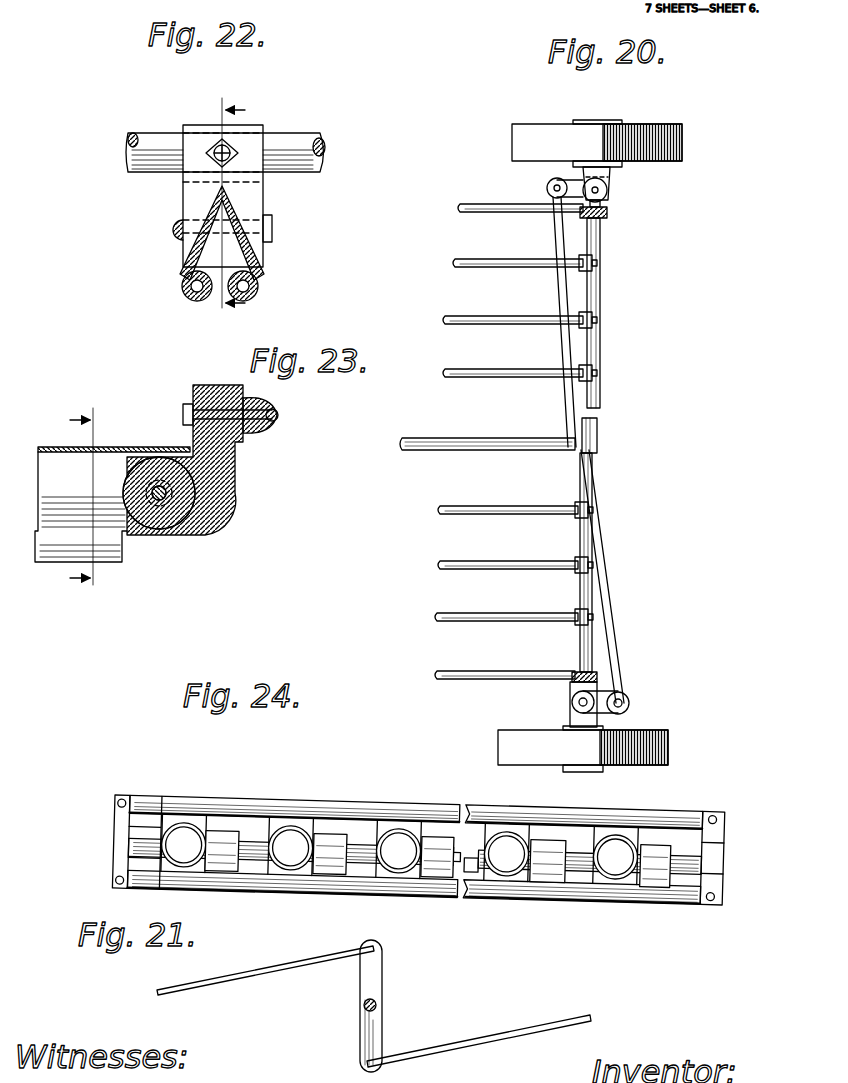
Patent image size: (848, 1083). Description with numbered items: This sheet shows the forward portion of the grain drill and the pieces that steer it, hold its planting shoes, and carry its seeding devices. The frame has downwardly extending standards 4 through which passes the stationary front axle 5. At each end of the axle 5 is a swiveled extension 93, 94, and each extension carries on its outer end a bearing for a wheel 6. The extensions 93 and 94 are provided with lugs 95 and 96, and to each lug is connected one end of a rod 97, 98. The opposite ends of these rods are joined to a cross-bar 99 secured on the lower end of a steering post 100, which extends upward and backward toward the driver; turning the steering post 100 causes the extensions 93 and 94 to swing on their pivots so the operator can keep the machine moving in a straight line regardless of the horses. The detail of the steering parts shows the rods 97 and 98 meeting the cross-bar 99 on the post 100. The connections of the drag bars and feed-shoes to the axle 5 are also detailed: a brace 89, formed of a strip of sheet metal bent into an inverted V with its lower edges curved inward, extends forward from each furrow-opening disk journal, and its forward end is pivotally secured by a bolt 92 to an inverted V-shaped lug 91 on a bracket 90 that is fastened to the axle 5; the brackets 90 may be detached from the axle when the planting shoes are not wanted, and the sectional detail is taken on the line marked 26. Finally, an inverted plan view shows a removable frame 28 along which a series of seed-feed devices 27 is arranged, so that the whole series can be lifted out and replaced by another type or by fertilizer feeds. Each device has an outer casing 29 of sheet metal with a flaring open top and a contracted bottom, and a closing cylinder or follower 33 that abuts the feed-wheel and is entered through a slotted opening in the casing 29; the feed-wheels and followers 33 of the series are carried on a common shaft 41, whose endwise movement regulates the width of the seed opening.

In FIG. 20, the standard 4 is at (607, 212).
In FIG. 22, the axle 5 is at (300, 148).
In FIG. 23, the axle 5 is at (265, 400).
In FIG. 20, the axle 5 is at (600, 300).
In FIG. 20, the wheel 6 is at (635, 145).
In FIG. 23, the section line 26 is at (89, 501).
In FIG. 22, the seed-feed device 27 is at (225, 211).
In FIG. 24, the seed-feed device 27 is at (353, 808).
In FIG. 24, the frame 28 is at (645, 890).
In FIG. 24, the outer casing 29 is at (282, 815).
In FIG. 24, the closing cylinder 33 is at (225, 858).
In FIG. 24, the shaft 41 is at (345, 865).
In FIG. 22, the brace 89 is at (240, 254).
In FIG. 20, the brace 89 is at (478, 318).
In FIG. 22, the bracket 90 is at (185, 192).
In FIG. 23, the bracket 90 is at (220, 465).
In FIG. 20, the bracket 90 is at (597, 372).
In FIG. 23, the lug 91 is at (155, 525).
In FIG. 22, the bolt 92 is at (175, 228).
In FIG. 23, the bolt 92 is at (159, 486).
In FIG. 20, the swiveled extension 93 is at (612, 181).
In FIG. 20, the swiveled extension 94 is at (570, 710).
In FIG. 20, the lug 95 is at (546, 184).
In FIG. 20, the lug 96 is at (630, 703).
In FIG. 20, the rod 97 is at (612, 597).
In FIG. 21, the rod 97 is at (485, 1035).
In FIG. 20, the rod 98 is at (575, 240).
In FIG. 21, the rod 98 is at (248, 972).
In FIG. 20, the cross-bar 99 is at (598, 440).
In FIG. 21, the cross-bar 99 is at (375, 972).
In FIG. 20, the steering post 100 is at (465, 438).
In FIG. 21, the steering post 100 is at (364, 1006).